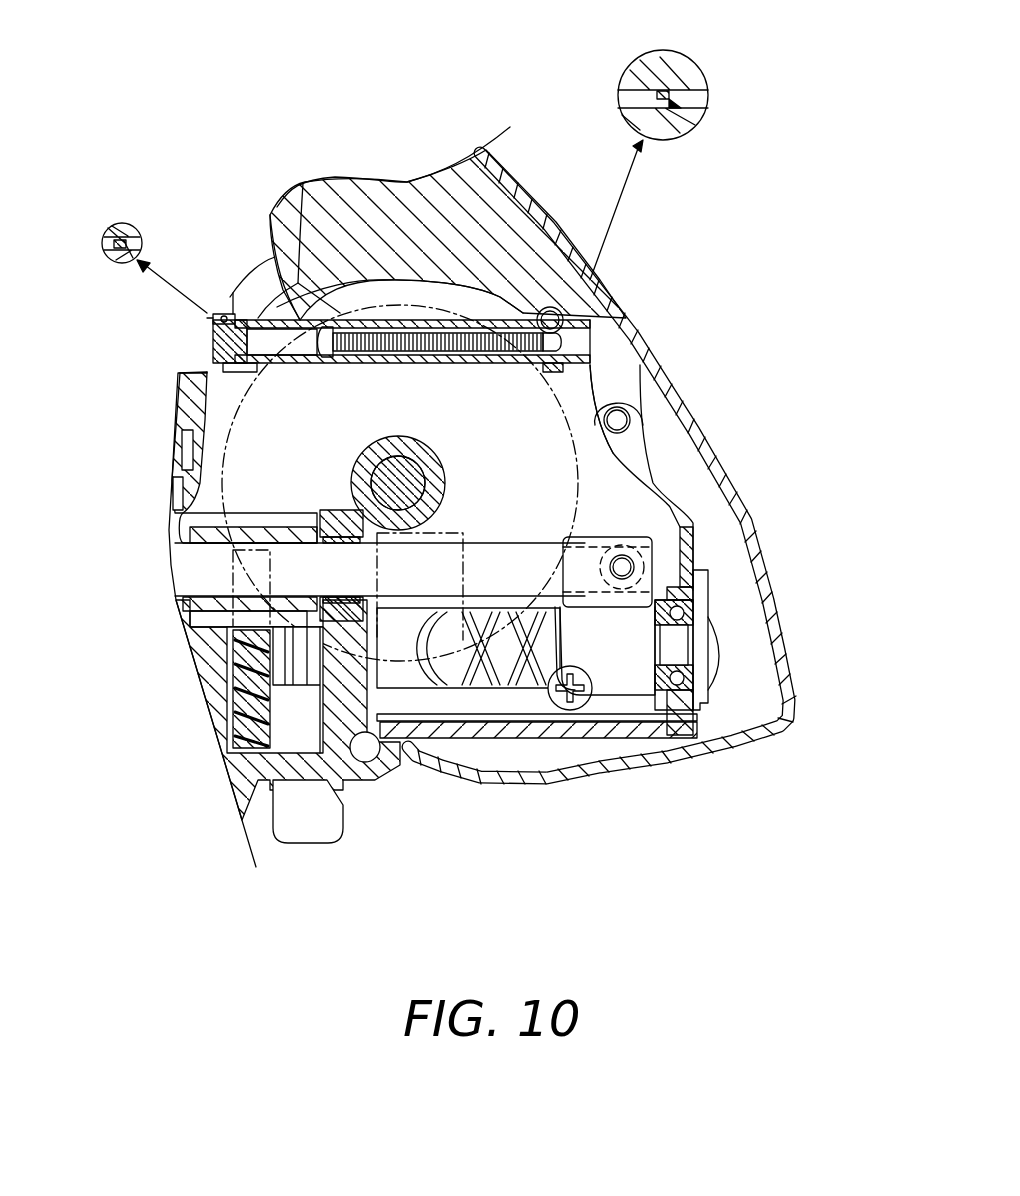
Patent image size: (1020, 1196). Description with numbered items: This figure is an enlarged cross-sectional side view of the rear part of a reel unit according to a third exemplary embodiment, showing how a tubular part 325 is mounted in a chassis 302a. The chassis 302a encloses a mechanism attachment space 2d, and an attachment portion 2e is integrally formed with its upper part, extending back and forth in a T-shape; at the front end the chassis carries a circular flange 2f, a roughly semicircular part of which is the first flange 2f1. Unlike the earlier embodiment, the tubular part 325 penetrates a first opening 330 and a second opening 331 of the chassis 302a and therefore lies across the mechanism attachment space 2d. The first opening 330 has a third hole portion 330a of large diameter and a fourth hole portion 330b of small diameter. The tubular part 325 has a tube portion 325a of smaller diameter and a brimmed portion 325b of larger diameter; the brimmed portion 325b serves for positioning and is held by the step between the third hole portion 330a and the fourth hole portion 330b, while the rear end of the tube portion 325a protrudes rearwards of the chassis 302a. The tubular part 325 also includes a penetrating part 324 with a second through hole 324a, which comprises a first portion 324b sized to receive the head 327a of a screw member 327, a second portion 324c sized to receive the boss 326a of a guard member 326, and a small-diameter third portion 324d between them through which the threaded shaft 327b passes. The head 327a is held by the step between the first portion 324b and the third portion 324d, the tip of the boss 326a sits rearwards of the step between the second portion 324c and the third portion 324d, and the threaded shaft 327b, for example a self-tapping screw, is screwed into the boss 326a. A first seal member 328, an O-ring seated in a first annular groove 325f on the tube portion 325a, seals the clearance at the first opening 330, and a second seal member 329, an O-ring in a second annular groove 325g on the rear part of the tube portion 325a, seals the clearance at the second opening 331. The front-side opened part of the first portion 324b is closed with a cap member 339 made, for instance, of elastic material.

The mechanism attachment space 2d is at (650, 523).
The attachment portion 2e is at (490, 157).
The circular flange 2f is at (225, 297).
The first flange 2f1 is at (213, 318).
The chassis 302a is at (633, 457).
The penetrating part 324 is at (298, 340).
The second through hole 324a is at (408, 332).
The first portion 324b is at (338, 327).
The second portion 324c is at (463, 235).
The third portion 324d is at (382, 317).
The tubular part 325 is at (267, 370).
The tube portion 325a is at (283, 310).
The brimmed portion 325b is at (207, 318).
The first annular groove 325f is at (183, 410).
The second annular groove 325g is at (663, 88).
The guard member 326 is at (682, 367).
The boss 326a is at (523, 315).
The screw member 327 is at (458, 357).
The head 327a is at (337, 350).
The threaded shaft 327b is at (490, 360).
The first seal member 328 is at (115, 243).
The second seal member 329 is at (555, 318).
The first opening 330 is at (210, 343).
The third hole portion 330a is at (207, 372).
The fourth hole portion 330b is at (213, 357).
The second opening 331 is at (563, 345).
The cap member 339 is at (210, 320).